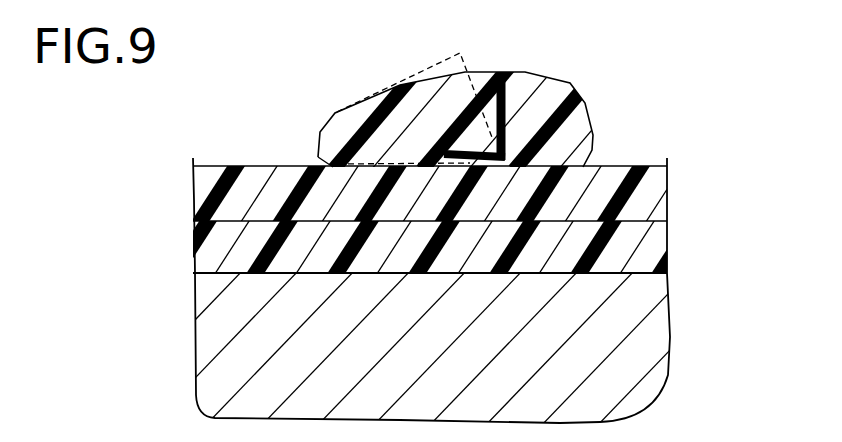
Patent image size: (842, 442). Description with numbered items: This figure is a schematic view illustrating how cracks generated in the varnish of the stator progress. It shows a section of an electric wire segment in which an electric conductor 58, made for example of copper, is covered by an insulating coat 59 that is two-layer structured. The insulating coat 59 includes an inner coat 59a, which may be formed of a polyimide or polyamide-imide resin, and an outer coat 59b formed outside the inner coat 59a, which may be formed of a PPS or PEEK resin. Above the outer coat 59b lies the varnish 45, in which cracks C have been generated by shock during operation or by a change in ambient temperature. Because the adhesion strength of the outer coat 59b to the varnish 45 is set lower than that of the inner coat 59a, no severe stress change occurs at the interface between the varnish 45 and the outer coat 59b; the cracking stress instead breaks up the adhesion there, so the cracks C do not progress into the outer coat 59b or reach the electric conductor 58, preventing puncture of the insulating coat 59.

The varnish 45 is at (572, 123).
The insulating coat 59 is at (484, 220).
The outer coat 59b is at (630, 203).
The inner coat 59a is at (630, 248).
The electric conductor 58 is at (625, 342).
The cracks C is at (504, 118).